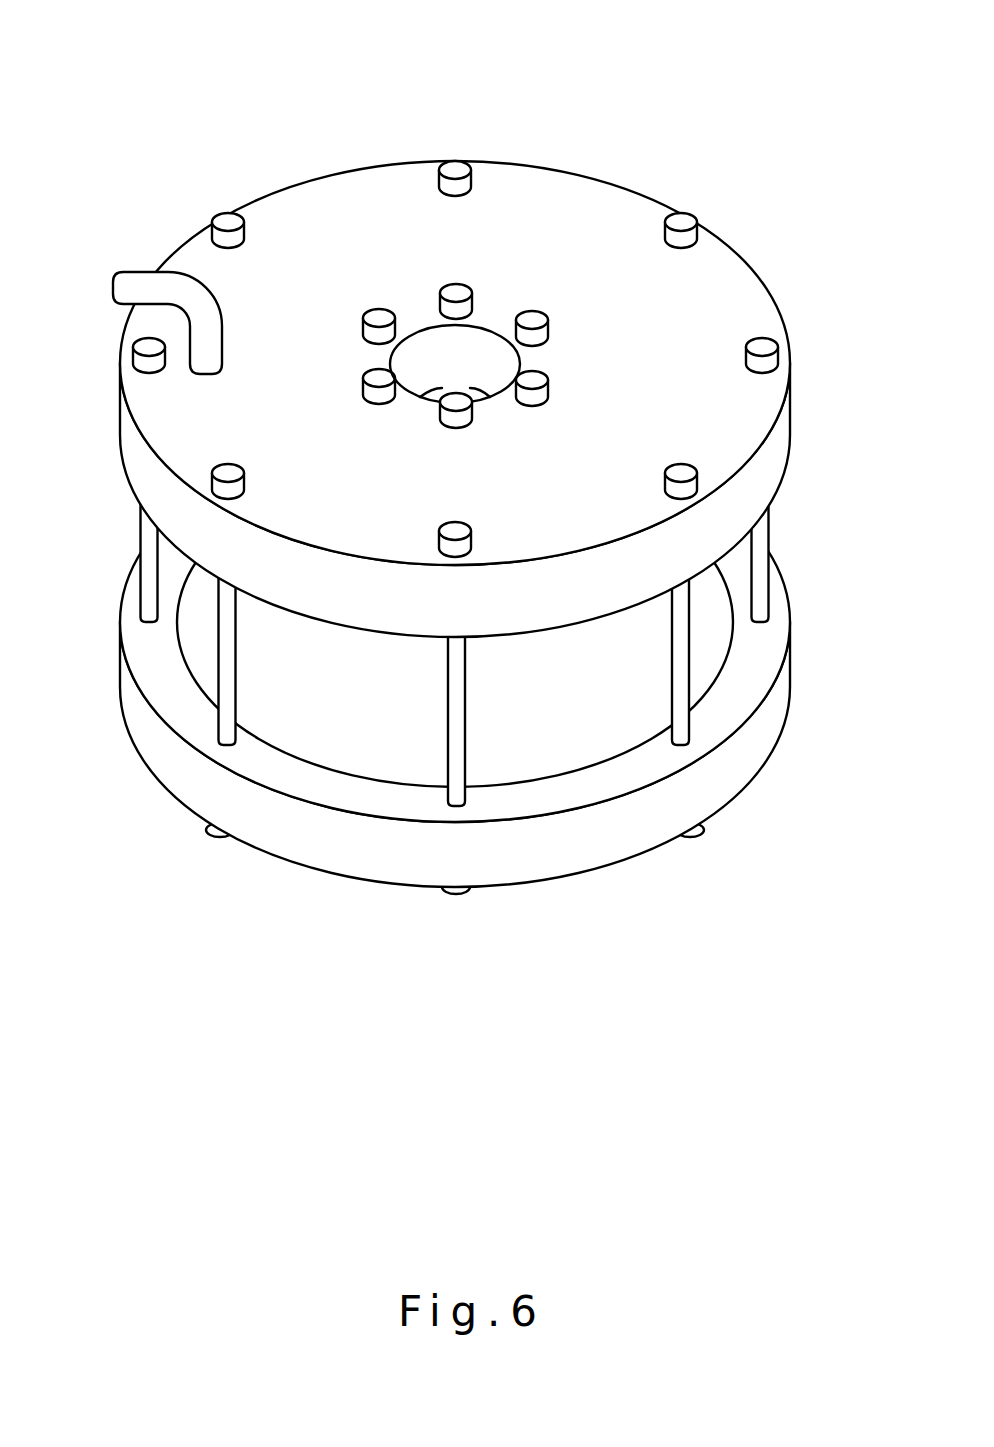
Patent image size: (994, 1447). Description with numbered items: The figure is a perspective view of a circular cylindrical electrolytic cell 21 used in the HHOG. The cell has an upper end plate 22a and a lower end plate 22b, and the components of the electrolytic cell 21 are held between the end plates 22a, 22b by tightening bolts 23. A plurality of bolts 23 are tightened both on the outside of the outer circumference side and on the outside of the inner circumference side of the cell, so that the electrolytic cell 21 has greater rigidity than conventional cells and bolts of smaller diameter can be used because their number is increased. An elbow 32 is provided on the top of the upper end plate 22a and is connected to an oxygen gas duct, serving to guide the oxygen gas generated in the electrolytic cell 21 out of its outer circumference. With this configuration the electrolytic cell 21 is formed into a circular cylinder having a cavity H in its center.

The circular cylindrical electrolytic cell 21 is at (464, 502).
The upper end plate 22a is at (700, 307).
The lower end plate 22b is at (285, 825).
The bolts 23 is at (455, 748).
The elbow 32 is at (138, 278).
The cavity H is at (430, 362).